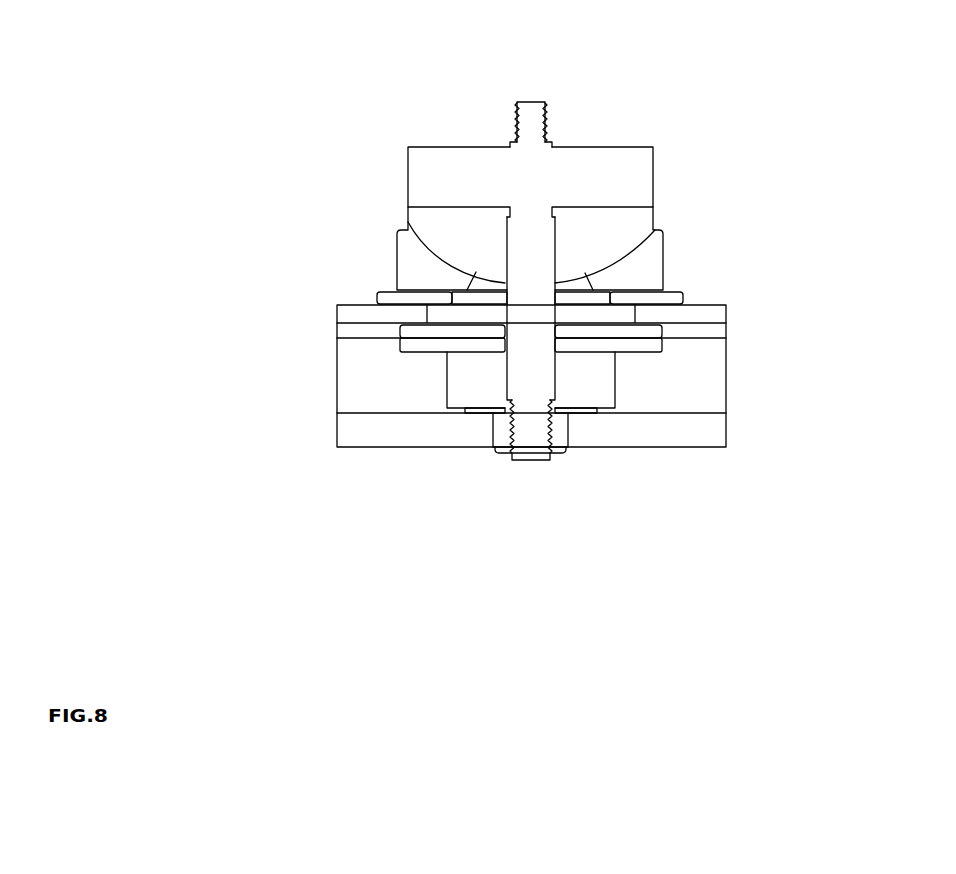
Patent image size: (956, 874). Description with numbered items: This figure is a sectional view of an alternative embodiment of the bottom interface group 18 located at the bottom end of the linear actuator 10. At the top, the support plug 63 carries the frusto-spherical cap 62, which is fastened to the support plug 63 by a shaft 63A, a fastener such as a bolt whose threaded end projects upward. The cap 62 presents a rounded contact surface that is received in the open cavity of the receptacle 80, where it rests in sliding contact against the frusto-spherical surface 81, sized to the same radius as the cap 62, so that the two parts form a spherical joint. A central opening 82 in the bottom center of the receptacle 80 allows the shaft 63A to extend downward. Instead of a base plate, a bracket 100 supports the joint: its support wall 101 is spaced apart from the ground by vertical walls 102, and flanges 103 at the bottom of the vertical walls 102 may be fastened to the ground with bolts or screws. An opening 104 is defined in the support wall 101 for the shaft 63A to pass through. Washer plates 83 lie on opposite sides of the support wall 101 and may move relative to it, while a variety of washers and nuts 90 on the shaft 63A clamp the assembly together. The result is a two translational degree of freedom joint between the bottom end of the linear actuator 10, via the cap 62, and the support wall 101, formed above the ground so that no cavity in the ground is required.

The linear actuator 10 is at (460, 104).
The bottom interface group 18 is at (691, 121).
The frusto-spherical cap 62 is at (635, 228).
The support plug 63 is at (418, 178).
The shaft 63A is at (537, 100).
The receptacle 80 is at (367, 220).
The frusto-spherical surface 81 is at (622, 253).
The central opening 82 is at (590, 278).
The washer plates 83 is at (400, 345).
The washers and nuts 90 is at (430, 355).
The bracket 100 is at (760, 323).
The support wall 101 is at (710, 305).
The vertical walls 102 is at (710, 375).
The flanges 103 is at (727, 429).
The opening 104 is at (428, 316).